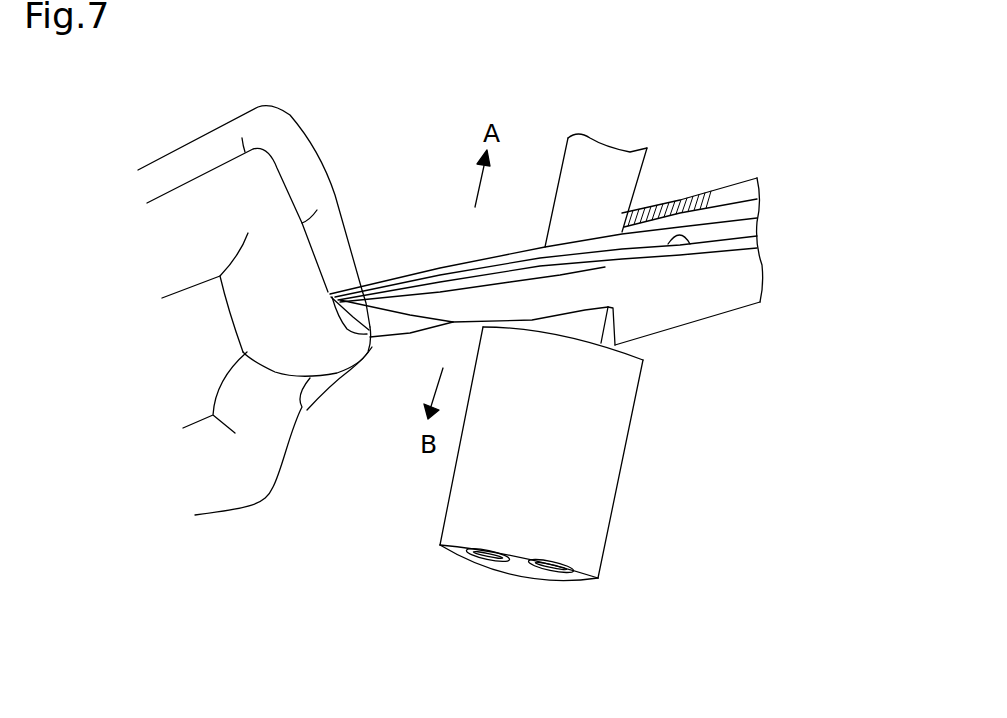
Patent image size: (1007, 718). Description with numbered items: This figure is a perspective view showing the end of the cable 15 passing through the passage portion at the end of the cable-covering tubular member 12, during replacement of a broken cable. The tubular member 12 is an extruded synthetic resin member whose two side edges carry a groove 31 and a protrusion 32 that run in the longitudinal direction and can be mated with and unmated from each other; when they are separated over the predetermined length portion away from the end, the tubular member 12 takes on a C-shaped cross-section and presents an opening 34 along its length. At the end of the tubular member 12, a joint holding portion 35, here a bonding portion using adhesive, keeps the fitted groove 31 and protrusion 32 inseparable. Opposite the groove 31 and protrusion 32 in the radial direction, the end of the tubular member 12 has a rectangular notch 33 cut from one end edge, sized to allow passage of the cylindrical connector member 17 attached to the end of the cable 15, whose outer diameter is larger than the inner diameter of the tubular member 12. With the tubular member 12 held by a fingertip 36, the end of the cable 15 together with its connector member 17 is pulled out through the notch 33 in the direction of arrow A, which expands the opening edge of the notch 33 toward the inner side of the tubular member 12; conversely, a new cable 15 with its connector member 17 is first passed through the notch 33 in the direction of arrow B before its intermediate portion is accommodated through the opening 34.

The cable-covering tubular member 12 is at (715, 318).
The cable 15 is at (560, 167).
The connector member 17 is at (616, 500).
The groove 31 is at (688, 240).
The protrusion 32 is at (697, 193).
The notch 33 is at (604, 327).
The opening 34 is at (747, 213).
The joint holding portion 35 is at (368, 298).
The fingertip 36 is at (281, 122).